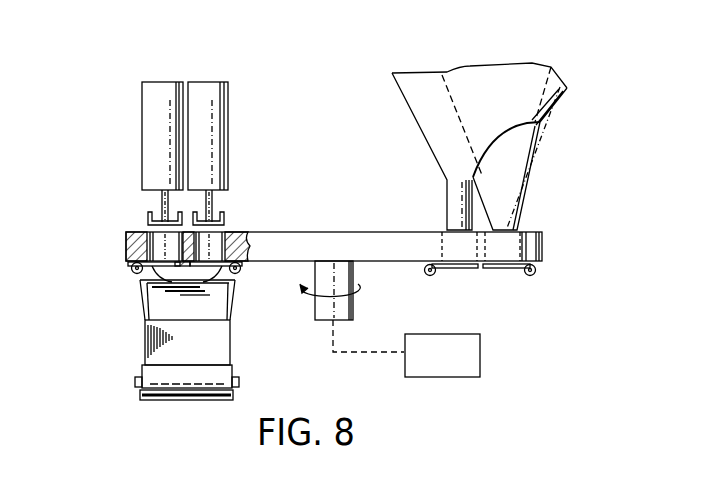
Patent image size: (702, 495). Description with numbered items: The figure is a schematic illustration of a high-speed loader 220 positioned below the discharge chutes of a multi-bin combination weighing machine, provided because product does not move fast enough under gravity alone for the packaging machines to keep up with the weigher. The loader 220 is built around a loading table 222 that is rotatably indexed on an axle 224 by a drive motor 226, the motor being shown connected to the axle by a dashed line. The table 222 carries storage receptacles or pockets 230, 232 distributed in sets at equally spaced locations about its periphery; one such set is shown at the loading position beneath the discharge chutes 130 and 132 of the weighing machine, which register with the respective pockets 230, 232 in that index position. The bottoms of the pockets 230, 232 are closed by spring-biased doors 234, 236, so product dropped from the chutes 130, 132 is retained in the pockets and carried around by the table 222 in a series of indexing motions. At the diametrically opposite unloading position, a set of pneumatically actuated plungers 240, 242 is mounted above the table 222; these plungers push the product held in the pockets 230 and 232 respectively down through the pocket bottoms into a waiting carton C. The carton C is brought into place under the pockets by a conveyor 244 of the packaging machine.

The high-speed loader 220 is at (313, 80).
The loading table 222 is at (360, 232).
The axle 224 is at (355, 284).
The drive motor 226 is at (481, 342).
The storage receptacle or pocket 230 is at (148, 224).
The storage receptacle or pocket 232 is at (224, 224).
The spring-biased door 234 is at (150, 281).
The spring-biased door 236 is at (230, 281).
The pneumatically actuated plunger 240 is at (143, 86).
The pneumatically actuated plunger 242 is at (229, 92).
The conveyor 244 is at (239, 372).
The carton C is at (143, 337).
The discharge chute 130 is at (530, 166).
The discharge chute 132 is at (415, 117).